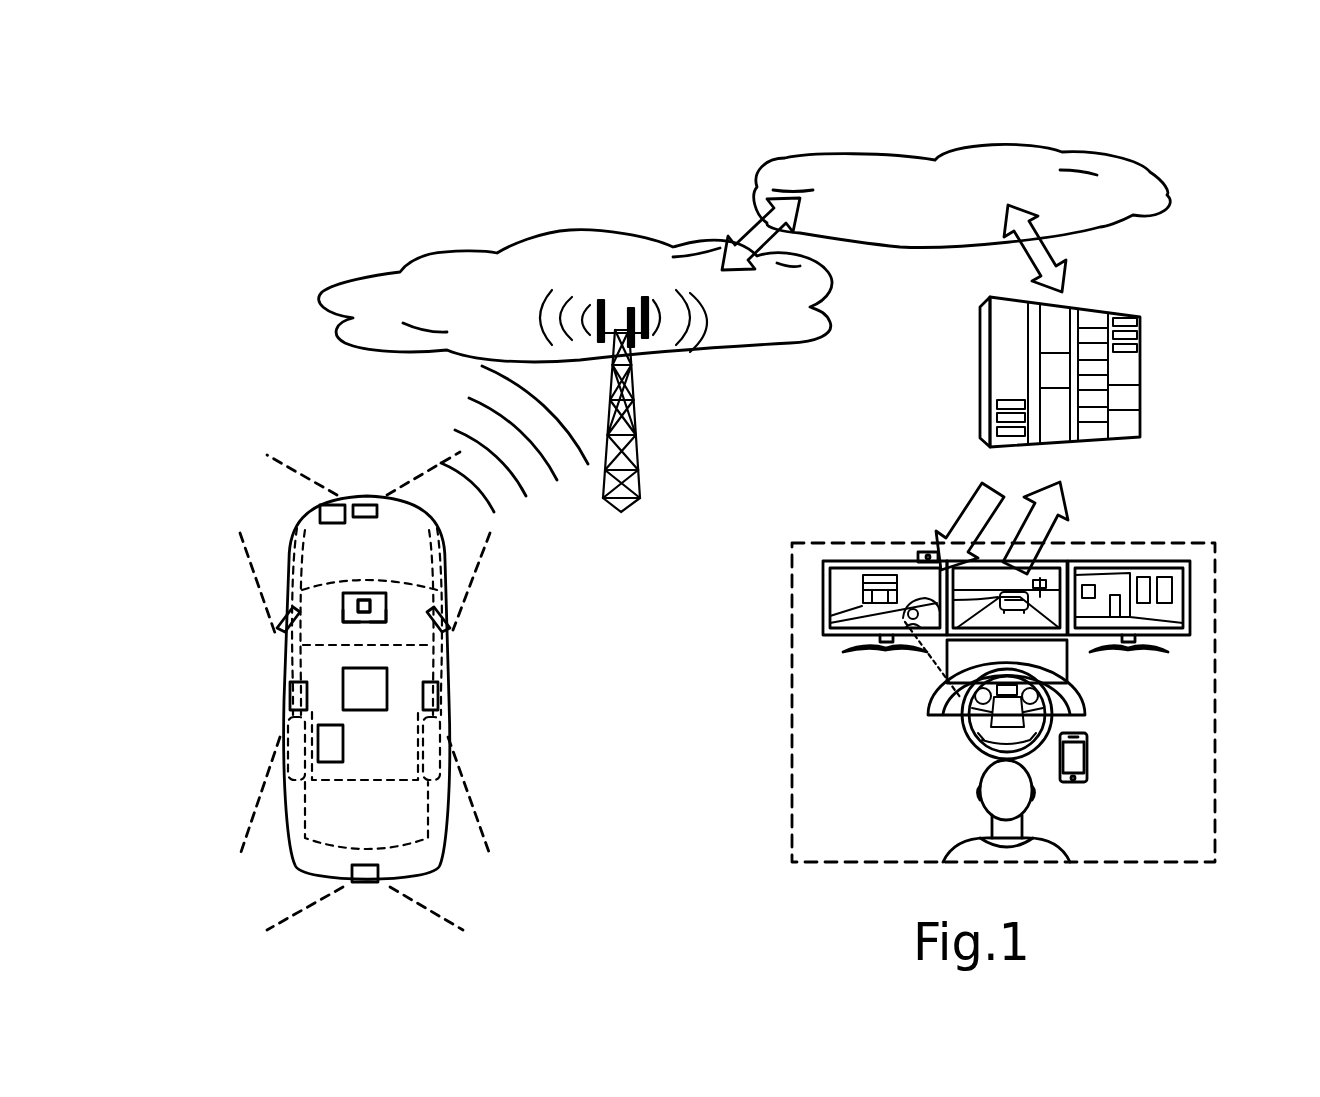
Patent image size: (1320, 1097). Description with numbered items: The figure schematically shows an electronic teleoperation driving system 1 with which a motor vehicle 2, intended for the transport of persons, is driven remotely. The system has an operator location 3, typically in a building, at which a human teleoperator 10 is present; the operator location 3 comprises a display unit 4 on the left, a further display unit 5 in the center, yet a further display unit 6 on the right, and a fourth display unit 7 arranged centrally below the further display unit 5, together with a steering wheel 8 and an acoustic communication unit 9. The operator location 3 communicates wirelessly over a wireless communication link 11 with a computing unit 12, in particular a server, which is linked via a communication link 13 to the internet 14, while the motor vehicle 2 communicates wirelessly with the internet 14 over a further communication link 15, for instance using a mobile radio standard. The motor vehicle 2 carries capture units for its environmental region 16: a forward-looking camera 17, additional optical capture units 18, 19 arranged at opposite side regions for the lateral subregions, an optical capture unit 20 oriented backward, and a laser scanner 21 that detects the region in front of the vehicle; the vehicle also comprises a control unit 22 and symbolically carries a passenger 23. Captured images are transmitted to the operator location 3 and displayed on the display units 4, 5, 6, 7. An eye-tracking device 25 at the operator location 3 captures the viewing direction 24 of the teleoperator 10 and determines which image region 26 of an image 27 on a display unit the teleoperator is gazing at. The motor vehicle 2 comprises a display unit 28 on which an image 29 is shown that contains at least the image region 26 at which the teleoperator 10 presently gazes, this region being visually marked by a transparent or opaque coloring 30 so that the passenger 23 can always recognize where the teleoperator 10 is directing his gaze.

The teleoperation driving system 1 is at (655, 138).
The motor vehicle 2 is at (236, 630).
The operator location 3 is at (1228, 620).
The display unit 4 is at (870, 560).
The further display unit 5 is at (1053, 560).
The yet a further display unit 6 is at (1167, 560).
The fourth display unit 7 is at (1070, 667).
The steering wheel 8 is at (952, 741).
The acoustic communication unit 9 is at (1092, 755).
The teleoperator 10 is at (1032, 810).
The wireless communication link 11 is at (962, 505).
The computing unit 12 is at (1133, 372).
The communication link 13 is at (1020, 259).
The internet 14 is at (972, 148).
The further communication link 15 is at (613, 222).
The environmental region 16 is at (234, 545).
The camera 17 is at (362, 505).
The optical capture unit 18 is at (430, 693).
The optical capture unit 19 is at (297, 693).
The optical capture unit 20 is at (365, 883).
The laser scanner 21 is at (318, 510).
The control unit 22 is at (341, 762).
The passenger 23 is at (370, 710).
The viewing direction 24 is at (943, 664).
The eye-tracking device 25 is at (927, 552).
The image region 26 is at (372, 621).
The image 27 is at (847, 582).
The display unit 28 is at (393, 590).
The image 29 is at (355, 621).
The coloring 30 is at (364, 599).